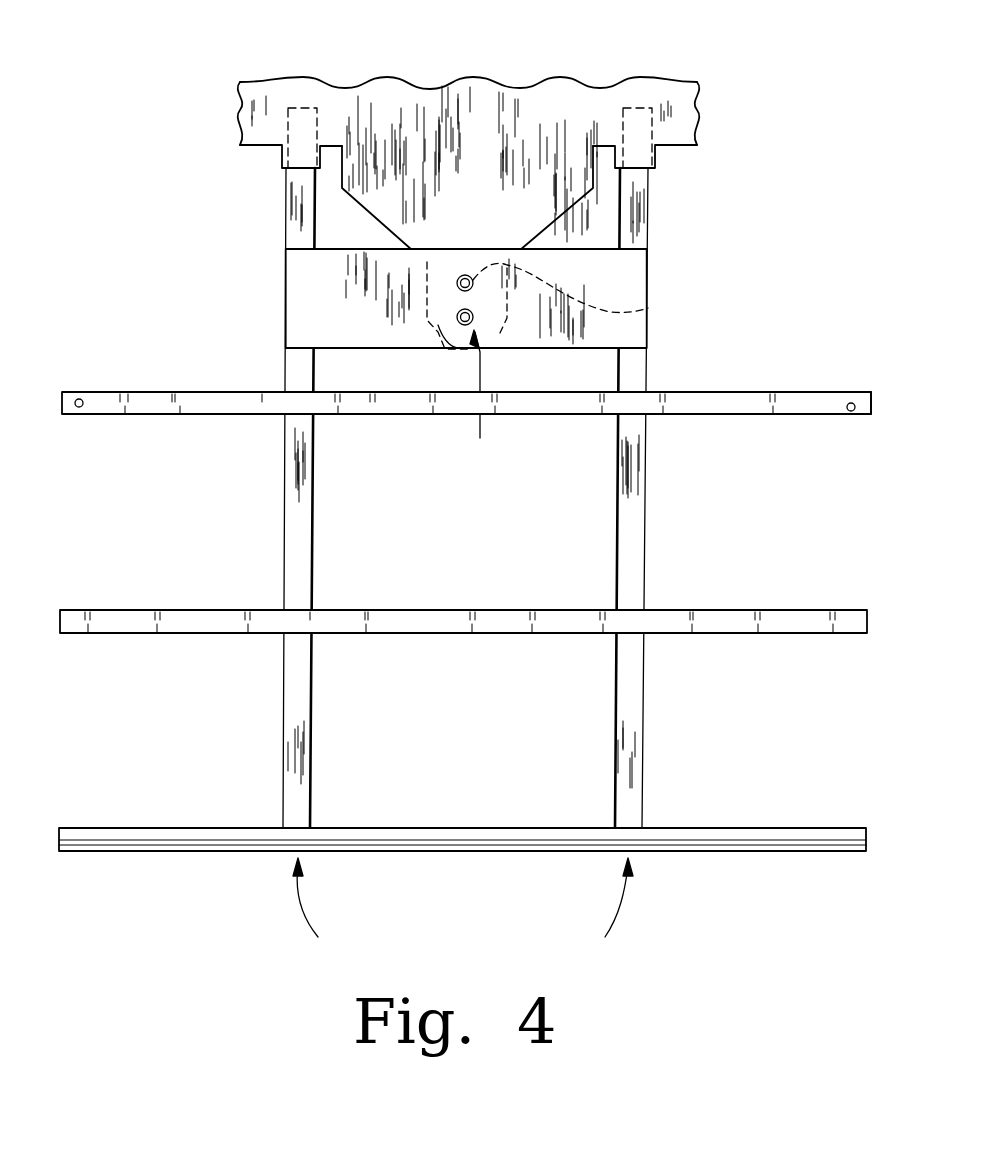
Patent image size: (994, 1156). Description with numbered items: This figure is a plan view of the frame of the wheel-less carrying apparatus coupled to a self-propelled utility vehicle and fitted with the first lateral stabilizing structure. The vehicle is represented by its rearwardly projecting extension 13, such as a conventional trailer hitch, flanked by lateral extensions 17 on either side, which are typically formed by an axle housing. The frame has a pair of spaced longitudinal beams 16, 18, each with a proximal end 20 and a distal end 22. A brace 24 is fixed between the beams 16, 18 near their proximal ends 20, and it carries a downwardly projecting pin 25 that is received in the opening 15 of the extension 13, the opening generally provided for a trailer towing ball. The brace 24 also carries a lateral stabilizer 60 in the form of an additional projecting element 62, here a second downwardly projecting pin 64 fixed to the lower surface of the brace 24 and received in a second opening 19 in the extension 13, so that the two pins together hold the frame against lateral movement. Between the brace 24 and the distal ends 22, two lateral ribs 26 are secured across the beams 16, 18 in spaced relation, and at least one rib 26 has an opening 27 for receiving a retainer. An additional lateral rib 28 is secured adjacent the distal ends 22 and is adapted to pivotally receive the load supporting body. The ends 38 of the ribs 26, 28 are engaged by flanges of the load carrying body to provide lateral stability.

The rearwardly projecting extension 13 is at (555, 128).
The opening 15 is at (458, 318).
The longitudinal beam 16 is at (292, 575).
The lateral extension 17 is at (263, 132).
The longitudinal beam 18 is at (633, 703).
The second opening 19 is at (650, 308).
The proximal end 20 is at (302, 125).
The distal end 22 is at (463, 912).
The brace 24 is at (300, 310).
The downwardly projecting pin 25 is at (479, 401).
The lateral rib 26 is at (142, 405).
The opening 27 is at (80, 397).
The additional lateral rib 28 is at (138, 840).
The end 38 is at (872, 403).
The lateral stabilizer 60 is at (456, 283).
The additional projecting element 62 is at (455, 284).
The second downwardly projecting pin 64 is at (473, 290).